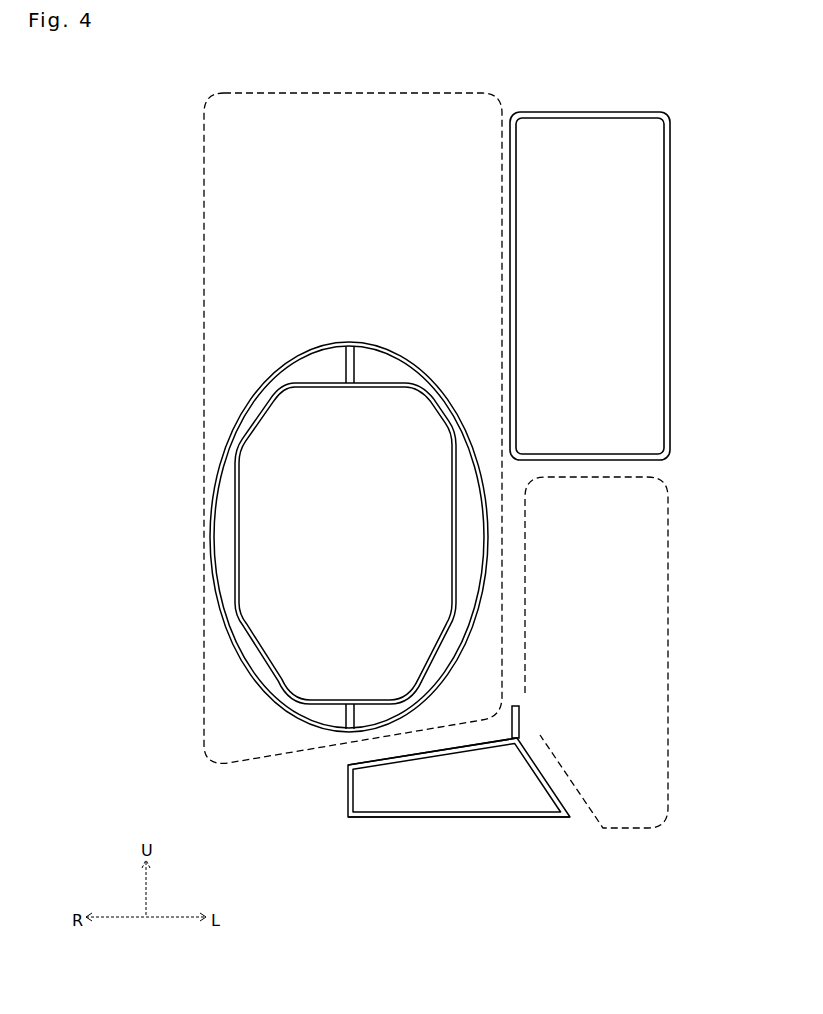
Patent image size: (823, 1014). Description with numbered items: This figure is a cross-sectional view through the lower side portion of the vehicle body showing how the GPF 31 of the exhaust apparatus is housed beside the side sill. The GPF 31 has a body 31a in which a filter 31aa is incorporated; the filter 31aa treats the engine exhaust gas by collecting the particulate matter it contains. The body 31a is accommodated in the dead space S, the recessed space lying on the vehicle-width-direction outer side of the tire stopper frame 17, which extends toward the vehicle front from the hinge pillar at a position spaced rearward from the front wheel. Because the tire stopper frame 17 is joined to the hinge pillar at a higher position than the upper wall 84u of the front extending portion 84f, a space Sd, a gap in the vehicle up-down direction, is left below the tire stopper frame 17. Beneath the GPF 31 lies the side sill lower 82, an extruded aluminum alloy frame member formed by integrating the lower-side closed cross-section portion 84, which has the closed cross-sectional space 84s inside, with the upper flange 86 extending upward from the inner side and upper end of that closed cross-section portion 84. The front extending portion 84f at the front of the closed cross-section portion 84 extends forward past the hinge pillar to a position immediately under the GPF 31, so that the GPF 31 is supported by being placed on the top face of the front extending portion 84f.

The dead space S is at (204, 281).
The space Sd is at (668, 548).
The tire stopper frame 17 is at (510, 228).
The GPF 31 is at (308, 532).
The body 31a is at (217, 470).
The filter 31aa is at (236, 540).
The upper flange 86 is at (521, 710).
The side sill lower 82 is at (450, 809).
The lower-side closed cross-section portion 84 is at (481, 802).
The closed cross-sectional space 84s is at (482, 790).
The upper wall 84u is at (356, 758).
The front extending portion 84f is at (517, 819).